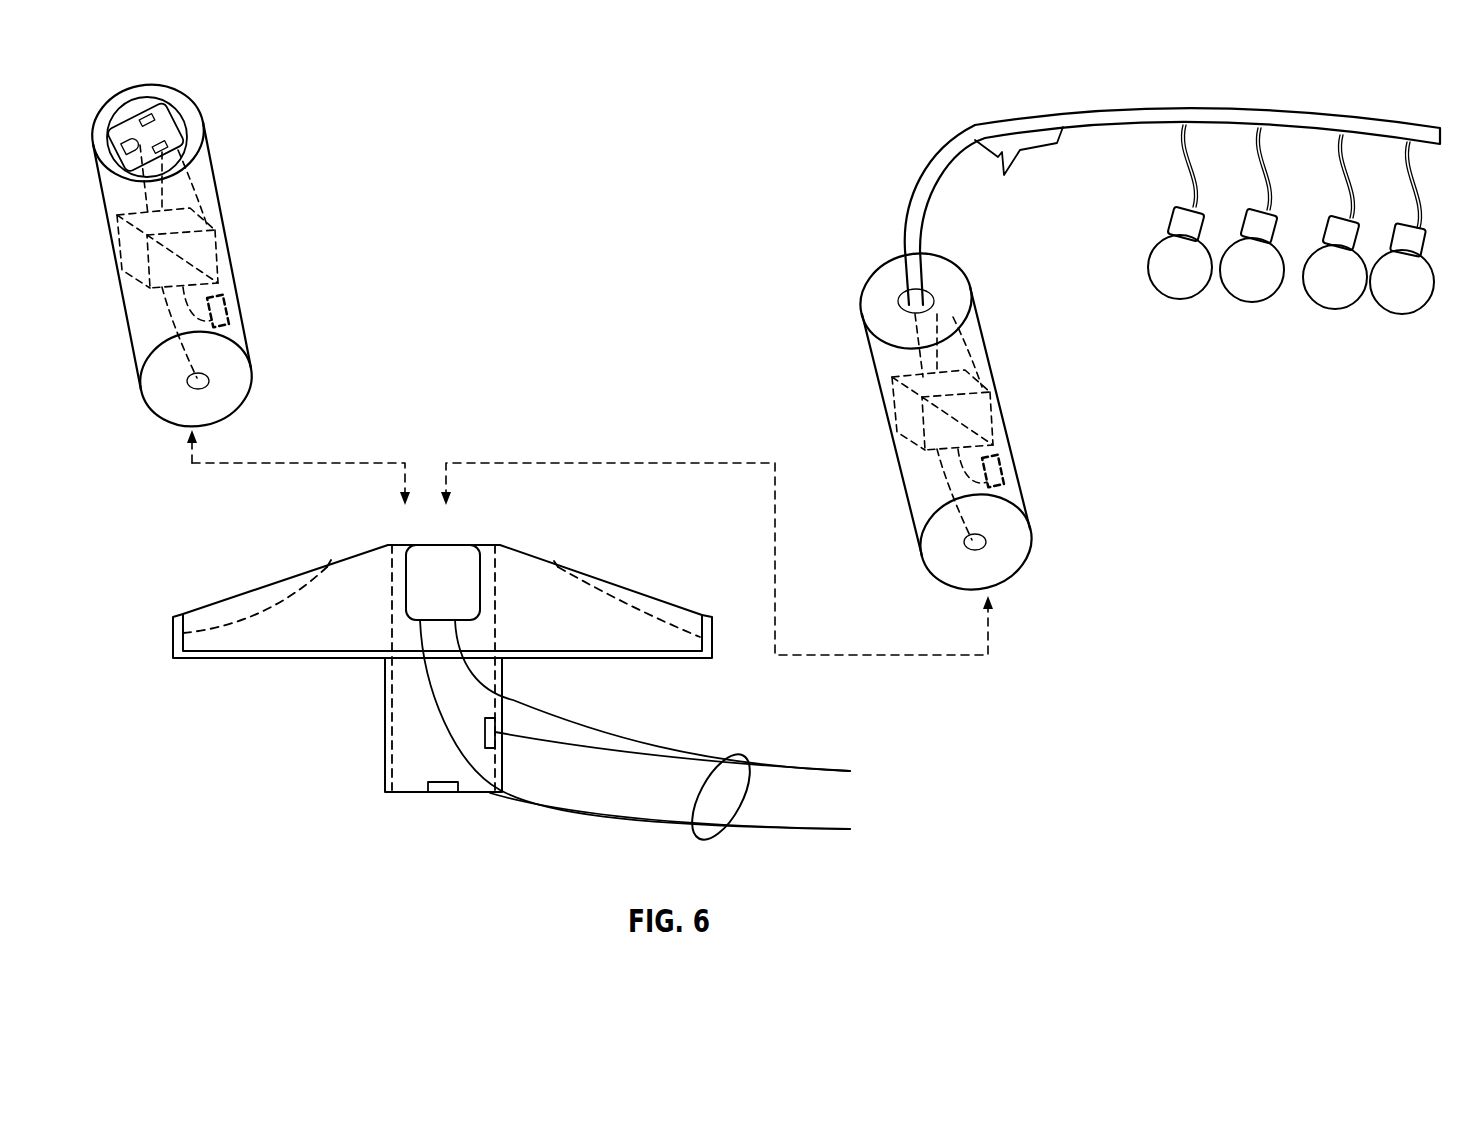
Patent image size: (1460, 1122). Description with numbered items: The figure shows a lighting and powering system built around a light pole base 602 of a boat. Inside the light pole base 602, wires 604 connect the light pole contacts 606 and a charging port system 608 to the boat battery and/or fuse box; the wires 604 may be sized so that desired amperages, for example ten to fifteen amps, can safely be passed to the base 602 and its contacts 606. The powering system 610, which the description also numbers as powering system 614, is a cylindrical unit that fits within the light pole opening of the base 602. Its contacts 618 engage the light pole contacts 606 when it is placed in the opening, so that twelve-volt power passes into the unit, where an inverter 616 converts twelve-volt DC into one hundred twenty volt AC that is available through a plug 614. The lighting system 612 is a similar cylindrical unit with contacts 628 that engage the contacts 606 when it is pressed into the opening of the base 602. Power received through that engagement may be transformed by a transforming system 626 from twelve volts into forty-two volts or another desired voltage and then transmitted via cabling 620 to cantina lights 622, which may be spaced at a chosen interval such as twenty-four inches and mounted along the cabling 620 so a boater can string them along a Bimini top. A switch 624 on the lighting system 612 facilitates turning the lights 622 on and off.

The light pole base 602 is at (304, 686).
The wires 604 is at (700, 840).
The light pole contacts 606 is at (497, 732).
The charging port system 608 is at (423, 597).
The first module 610 is at (268, 187).
The lighting system 612 is at (1033, 480).
The plug 614 is at (160, 110).
The inverter 616 is at (159, 272).
The contacts 618 is at (227, 308).
The cabling 620 is at (1159, 93).
The cantina lights 622 is at (1169, 310).
The switch 624 is at (1035, 163).
The transforming system 626 is at (934, 434).
The contacts 628 is at (1003, 466).